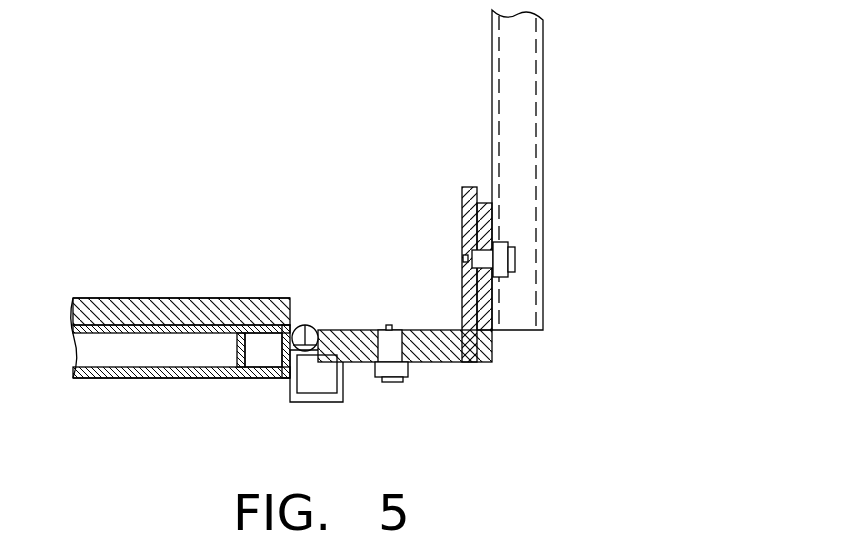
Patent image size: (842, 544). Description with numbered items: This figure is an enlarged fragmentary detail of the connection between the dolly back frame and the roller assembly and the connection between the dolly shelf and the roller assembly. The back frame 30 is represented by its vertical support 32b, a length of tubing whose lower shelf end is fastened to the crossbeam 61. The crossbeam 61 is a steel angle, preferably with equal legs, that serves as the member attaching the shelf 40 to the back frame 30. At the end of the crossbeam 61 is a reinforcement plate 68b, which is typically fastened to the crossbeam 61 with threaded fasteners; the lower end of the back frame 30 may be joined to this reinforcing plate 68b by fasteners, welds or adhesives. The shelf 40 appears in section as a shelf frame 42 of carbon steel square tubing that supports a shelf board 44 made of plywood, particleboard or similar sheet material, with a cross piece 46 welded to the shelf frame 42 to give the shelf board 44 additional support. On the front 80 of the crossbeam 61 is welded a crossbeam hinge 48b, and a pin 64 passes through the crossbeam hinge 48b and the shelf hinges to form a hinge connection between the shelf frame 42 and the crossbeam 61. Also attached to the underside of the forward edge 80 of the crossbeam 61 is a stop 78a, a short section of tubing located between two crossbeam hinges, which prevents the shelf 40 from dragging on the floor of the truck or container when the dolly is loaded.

The back frame 30 is at (547, 66).
The vertical support 32b is at (543, 150).
The shelf 40 is at (154, 334).
The shelf board 44 is at (190, 298).
The cross piece 46 is at (147, 378).
The shelf frame 42 is at (240, 375).
The front of crossbeam 80 is at (278, 378).
The pin 64 is at (304, 325).
The crossbeam hinge 48b is at (306, 326).
The crossbeam 61 is at (462, 205).
The reinforcement plate 68b is at (494, 345).
The stop 78a is at (318, 402).